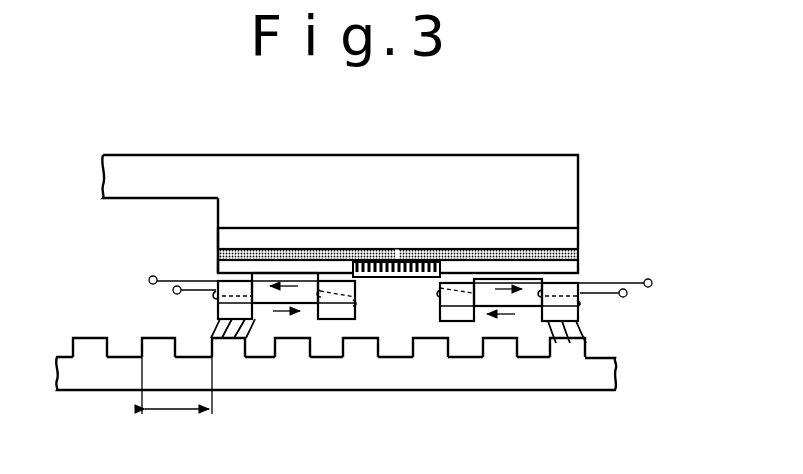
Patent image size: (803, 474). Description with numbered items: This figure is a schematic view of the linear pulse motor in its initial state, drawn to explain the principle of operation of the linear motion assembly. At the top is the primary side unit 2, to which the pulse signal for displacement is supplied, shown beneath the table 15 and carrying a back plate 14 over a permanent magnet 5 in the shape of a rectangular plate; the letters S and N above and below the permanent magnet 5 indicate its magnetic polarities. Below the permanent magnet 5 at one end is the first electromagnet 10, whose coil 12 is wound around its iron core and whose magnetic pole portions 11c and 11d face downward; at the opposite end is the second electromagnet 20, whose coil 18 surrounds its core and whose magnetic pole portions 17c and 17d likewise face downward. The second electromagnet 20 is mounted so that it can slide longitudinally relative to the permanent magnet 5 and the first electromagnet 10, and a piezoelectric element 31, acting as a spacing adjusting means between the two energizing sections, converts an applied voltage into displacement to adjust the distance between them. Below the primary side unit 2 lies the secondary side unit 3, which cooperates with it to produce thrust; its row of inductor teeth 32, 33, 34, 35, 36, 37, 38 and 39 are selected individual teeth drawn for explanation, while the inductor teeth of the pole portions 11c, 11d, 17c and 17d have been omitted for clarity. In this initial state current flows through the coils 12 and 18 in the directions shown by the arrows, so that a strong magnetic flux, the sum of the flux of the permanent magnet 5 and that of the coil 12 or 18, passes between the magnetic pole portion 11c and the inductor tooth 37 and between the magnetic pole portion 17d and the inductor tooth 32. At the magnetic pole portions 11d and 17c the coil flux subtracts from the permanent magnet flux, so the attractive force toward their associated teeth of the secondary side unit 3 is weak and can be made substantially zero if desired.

The primary side unit 2 is at (598, 252).
The secondary side unit 3 is at (60, 398).
The permanent magnet 5 is at (216, 247).
The first electromagnet 10 is at (210, 252).
The coil 12 is at (179, 286).
The magnetic pole portion 11c is at (214, 306).
The magnetic pole portion 11d is at (323, 320).
The back plate 14 is at (578, 238).
The table 15 is at (582, 179).
The magnetic pole portion 17c is at (465, 323).
The magnetic pole portion 17d is at (580, 315).
The coil 18 is at (652, 281).
The second electromagnet 20 is at (588, 263).
The piezoelectric element 31 is at (393, 278).
The inductor tooth 32 is at (568, 351).
The inductor tooth 33 is at (497, 351).
The inductor tooth 34 is at (433, 348).
The inductor tooth 35 is at (360, 348).
The inductor tooth 36 is at (290, 347).
The inductor tooth 37 is at (227, 346).
The inductor tooth 38 is at (158, 343).
The inductor tooth 39 is at (87, 345).